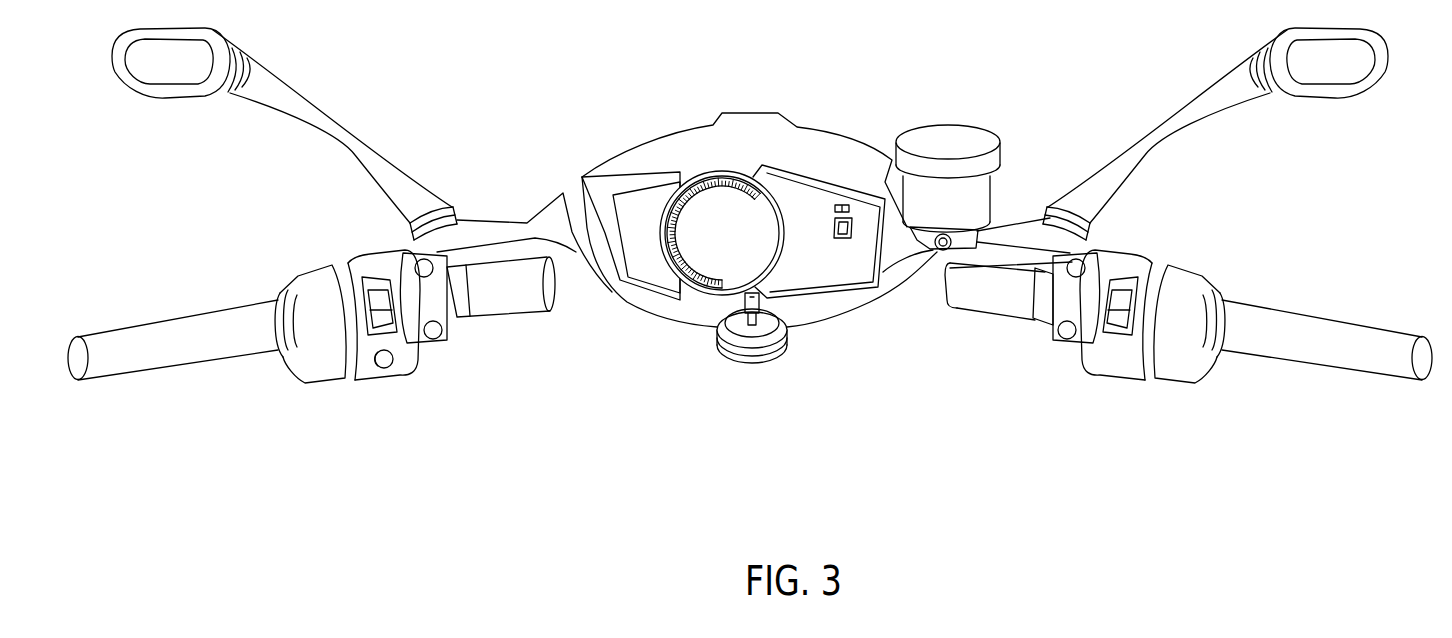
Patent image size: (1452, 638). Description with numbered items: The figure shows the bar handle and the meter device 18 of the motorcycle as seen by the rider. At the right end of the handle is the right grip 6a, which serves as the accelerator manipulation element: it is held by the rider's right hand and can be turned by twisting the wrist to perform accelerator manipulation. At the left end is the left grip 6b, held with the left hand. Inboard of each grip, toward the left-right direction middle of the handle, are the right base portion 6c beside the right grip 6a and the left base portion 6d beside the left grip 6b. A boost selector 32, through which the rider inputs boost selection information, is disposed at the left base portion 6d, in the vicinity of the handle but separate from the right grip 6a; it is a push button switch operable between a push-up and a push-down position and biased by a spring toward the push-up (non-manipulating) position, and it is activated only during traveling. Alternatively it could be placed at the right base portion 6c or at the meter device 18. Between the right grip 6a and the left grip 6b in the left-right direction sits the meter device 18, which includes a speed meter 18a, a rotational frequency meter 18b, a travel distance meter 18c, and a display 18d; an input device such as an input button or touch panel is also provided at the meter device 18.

The right grip 6a is at (1287, 342).
The left grip 6b is at (215, 342).
The right base portion 6c is at (1135, 383).
The left base portion 6d is at (370, 383).
The meter device 18 is at (786, 268).
The speed meter 18a is at (843, 240).
The rotational frequency meter 18b is at (712, 290).
The travel distance meter 18c is at (850, 210).
The display 18d is at (658, 278).
The boost selector 32 is at (398, 377).